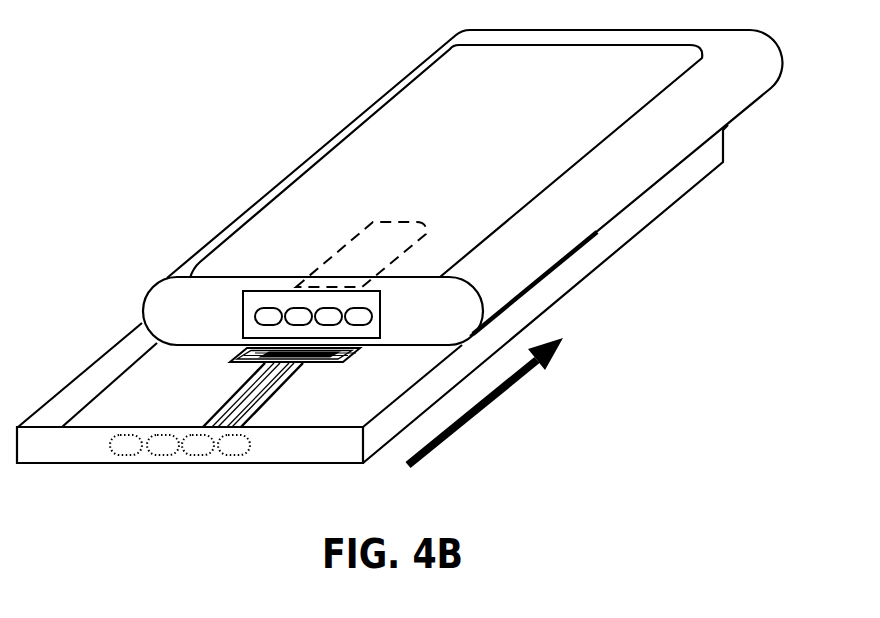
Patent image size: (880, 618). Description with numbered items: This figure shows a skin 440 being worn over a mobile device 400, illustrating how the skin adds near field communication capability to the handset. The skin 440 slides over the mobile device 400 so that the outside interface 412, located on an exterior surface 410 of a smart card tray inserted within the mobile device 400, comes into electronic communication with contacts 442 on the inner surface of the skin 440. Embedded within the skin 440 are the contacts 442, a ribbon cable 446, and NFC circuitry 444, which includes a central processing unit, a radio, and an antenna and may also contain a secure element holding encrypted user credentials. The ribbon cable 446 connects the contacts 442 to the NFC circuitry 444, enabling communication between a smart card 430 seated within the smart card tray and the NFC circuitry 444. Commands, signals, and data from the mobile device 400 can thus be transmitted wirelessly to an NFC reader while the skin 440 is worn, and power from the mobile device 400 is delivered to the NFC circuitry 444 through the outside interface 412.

The mobile device 400 is at (371, 109).
The exterior surface 410 is at (255, 299).
The outside interface 412 is at (293, 317).
The smart card 430 is at (353, 253).
The skin 440 is at (583, 272).
The contact points 442 is at (192, 455).
The NFC circuitry 444 is at (231, 358).
The ribbon cable 446 is at (258, 400).